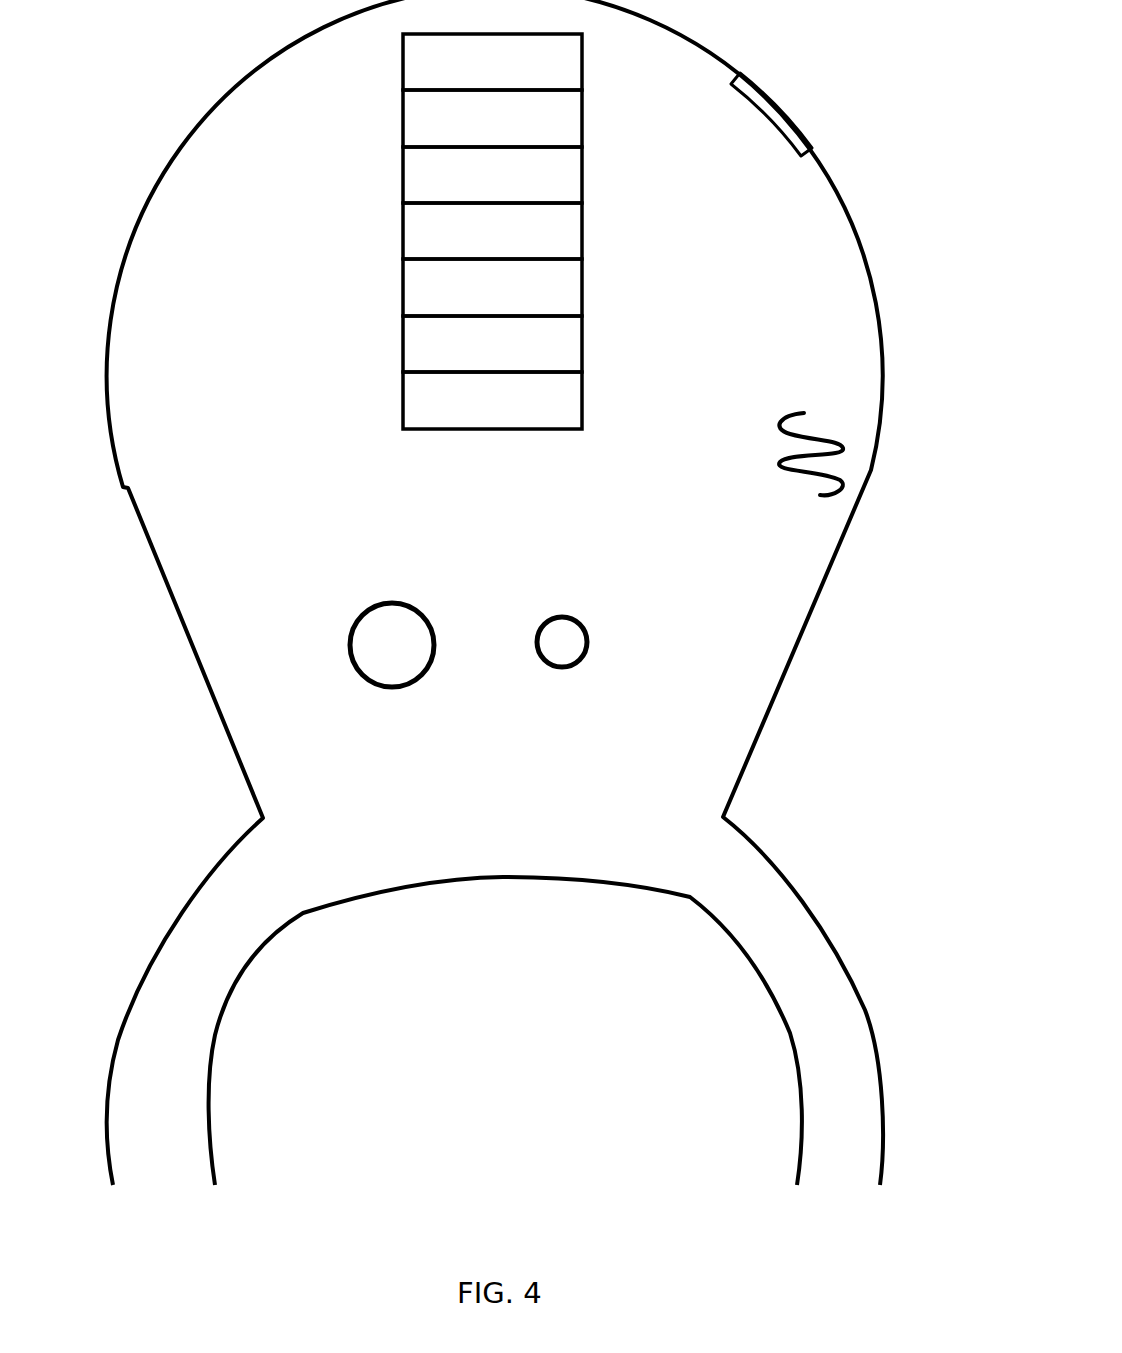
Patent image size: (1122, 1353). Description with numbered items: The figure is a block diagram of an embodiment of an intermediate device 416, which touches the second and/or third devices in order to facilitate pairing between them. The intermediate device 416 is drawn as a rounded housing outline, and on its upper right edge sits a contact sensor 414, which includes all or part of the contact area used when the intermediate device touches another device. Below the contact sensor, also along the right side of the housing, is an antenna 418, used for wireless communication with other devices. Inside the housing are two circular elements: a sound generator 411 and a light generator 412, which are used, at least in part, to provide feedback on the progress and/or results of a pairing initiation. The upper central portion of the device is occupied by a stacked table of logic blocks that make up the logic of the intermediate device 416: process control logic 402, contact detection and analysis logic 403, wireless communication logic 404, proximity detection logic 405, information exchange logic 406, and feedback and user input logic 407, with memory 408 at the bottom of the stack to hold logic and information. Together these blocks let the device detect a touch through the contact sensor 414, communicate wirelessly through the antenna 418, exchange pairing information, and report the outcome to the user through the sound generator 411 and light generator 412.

The process control logic 402 is at (468, 75).
The contact detection and analysis logic 403 is at (468, 132).
The wireless communication logic 404 is at (468, 188).
The proximity detection logic 405 is at (468, 244).
The information exchange logic 406 is at (468, 301).
The feedback and user input logic 407 is at (468, 357).
The memory 408 is at (468, 414).
The sound generator 411 is at (349, 650).
The light generator 412 is at (588, 632).
The contact sensor 414 is at (793, 105).
The intermediate device 416 is at (883, 312).
The antenna 418 is at (843, 440).